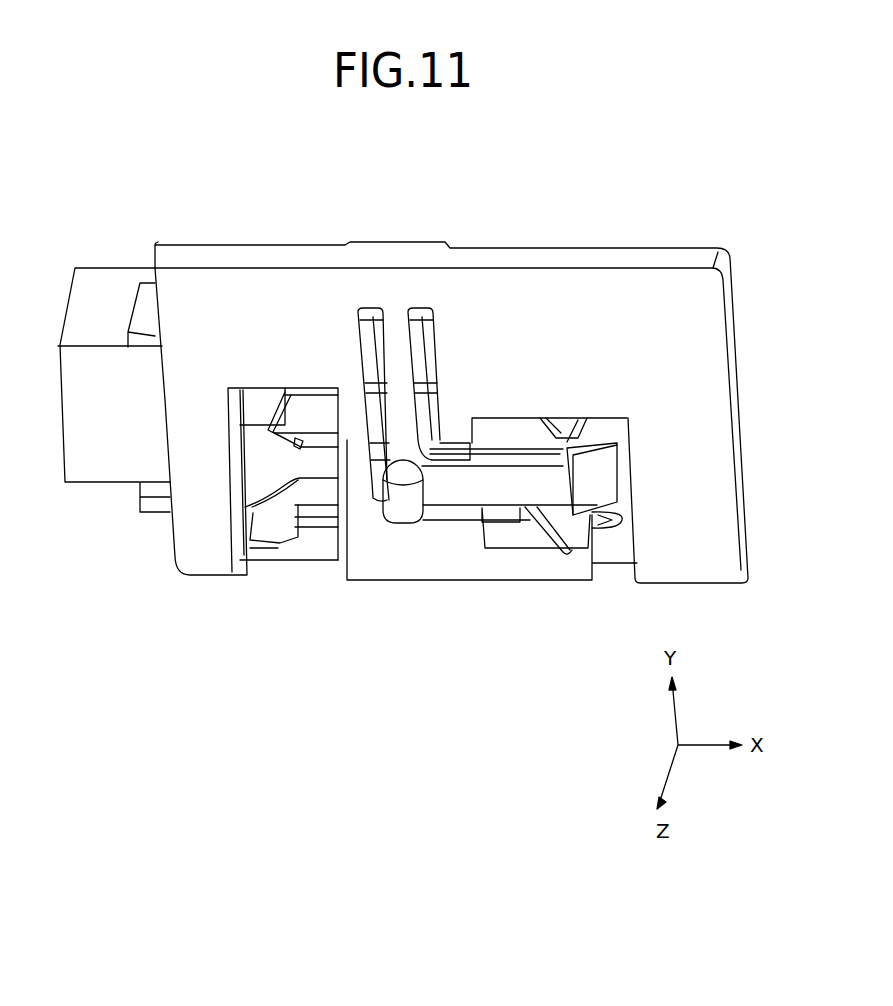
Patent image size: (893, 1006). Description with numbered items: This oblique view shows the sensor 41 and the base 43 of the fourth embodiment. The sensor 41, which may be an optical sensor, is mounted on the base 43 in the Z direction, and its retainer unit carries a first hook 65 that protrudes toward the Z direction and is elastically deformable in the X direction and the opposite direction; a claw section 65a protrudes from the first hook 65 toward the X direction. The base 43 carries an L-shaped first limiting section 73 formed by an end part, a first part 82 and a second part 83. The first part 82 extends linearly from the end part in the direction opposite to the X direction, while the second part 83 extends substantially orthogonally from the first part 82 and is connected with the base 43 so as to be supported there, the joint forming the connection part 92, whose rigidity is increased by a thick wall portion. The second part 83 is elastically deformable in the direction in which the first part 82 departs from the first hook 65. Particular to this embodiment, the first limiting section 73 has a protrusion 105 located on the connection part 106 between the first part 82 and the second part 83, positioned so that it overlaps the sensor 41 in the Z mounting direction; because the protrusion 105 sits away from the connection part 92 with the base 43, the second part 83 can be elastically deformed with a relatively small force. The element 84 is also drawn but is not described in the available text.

The sensor 41 is at (122, 262).
The base 43 is at (645, 242).
The connection part 92 is at (415, 406).
The second part 83 is at (393, 322).
The first limiting section 73 is at (490, 443).
The first hook 65 is at (635, 441).
The claw section 65a is at (608, 473).
The connection part 106 is at (370, 490).
The protrusion 105 is at (403, 503).
The first part 82 is at (472, 490).
The bent portion 84 is at (552, 495).